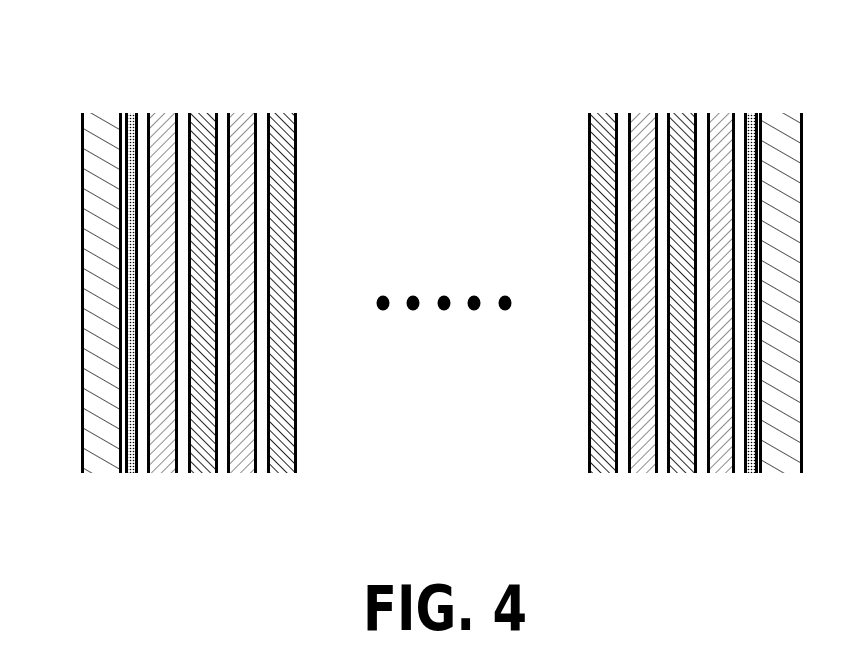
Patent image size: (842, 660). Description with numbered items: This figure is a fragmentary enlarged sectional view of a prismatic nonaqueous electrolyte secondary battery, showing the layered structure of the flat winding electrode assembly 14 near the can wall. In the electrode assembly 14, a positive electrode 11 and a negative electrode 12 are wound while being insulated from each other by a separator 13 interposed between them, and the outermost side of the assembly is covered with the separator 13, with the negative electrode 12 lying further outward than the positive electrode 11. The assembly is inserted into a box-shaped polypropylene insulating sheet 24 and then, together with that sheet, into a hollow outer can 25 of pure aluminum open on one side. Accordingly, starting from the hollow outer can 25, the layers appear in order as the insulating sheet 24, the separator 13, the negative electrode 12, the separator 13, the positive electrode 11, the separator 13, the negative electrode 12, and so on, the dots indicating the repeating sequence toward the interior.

The flat winding electrode assembly 14 is at (411, 282).
The positive electrode 11 is at (205, 120).
The negative electrode 12 is at (158, 119).
The separator 13 is at (142, 473).
The insulating sheet 24 is at (131, 118).
The hollow outer can 25 is at (100, 462).